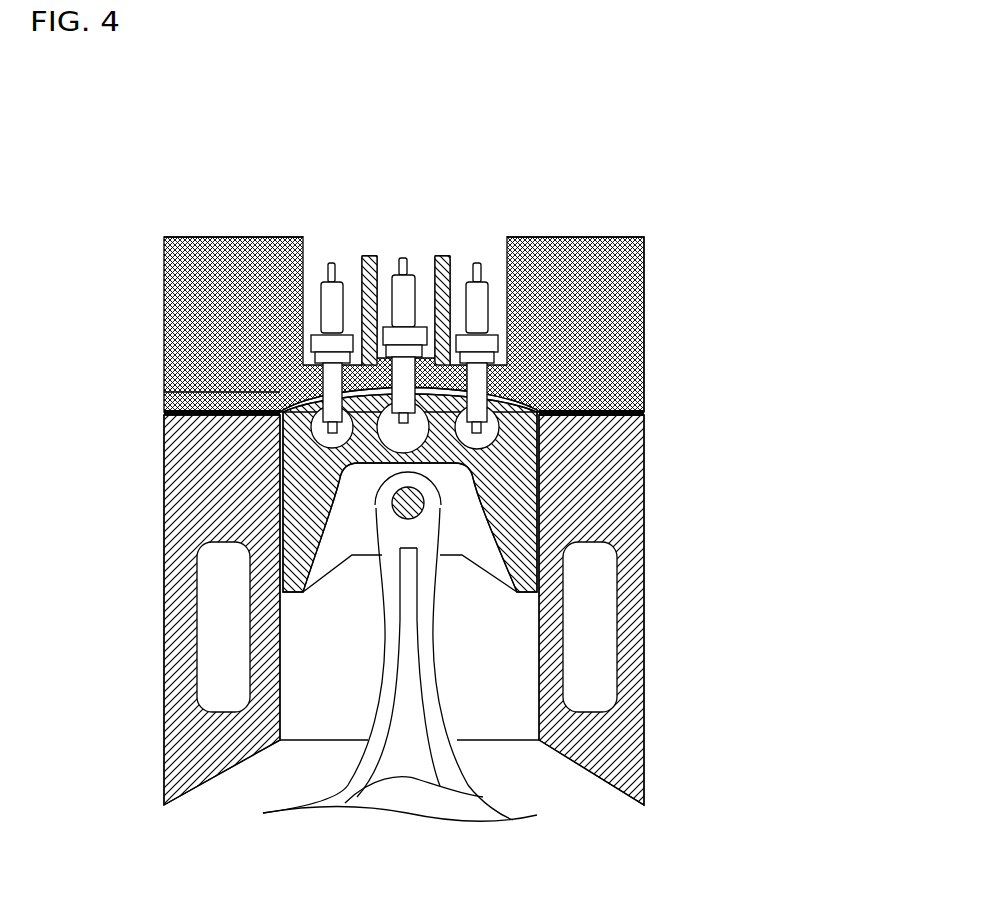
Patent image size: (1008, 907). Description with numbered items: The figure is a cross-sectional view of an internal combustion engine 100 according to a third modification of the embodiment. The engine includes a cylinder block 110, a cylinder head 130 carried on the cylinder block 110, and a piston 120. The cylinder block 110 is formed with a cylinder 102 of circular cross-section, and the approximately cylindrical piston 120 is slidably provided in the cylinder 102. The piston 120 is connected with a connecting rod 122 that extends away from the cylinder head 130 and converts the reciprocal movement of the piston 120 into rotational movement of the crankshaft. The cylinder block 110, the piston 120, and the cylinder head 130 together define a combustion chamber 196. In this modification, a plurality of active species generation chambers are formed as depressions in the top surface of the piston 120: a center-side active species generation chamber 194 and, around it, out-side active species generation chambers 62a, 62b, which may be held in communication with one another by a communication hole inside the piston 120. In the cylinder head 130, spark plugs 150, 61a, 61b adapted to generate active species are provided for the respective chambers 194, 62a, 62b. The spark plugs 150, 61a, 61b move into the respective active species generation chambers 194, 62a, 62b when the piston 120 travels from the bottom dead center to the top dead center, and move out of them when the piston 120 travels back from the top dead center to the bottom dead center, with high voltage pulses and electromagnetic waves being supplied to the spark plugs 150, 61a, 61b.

The internal combustion engine 100 is at (593, 116).
The spark plug 61a is at (330, 315).
The spark plug 150 is at (400, 302).
The spark plug 61b is at (472, 315).
The combustion chamber 196 is at (164, 391).
The cylinder head 130 is at (644, 385).
The cylinder block 110 is at (645, 503).
The out-side active species generation chamber 62a is at (330, 448).
The out-side active species generation chamber 62b is at (468, 449).
The center-side active species generation chamber 194 is at (396, 438).
The cylinder 102 is at (279, 695).
The connecting rod 122 is at (447, 740).
The piston 120 is at (503, 590).